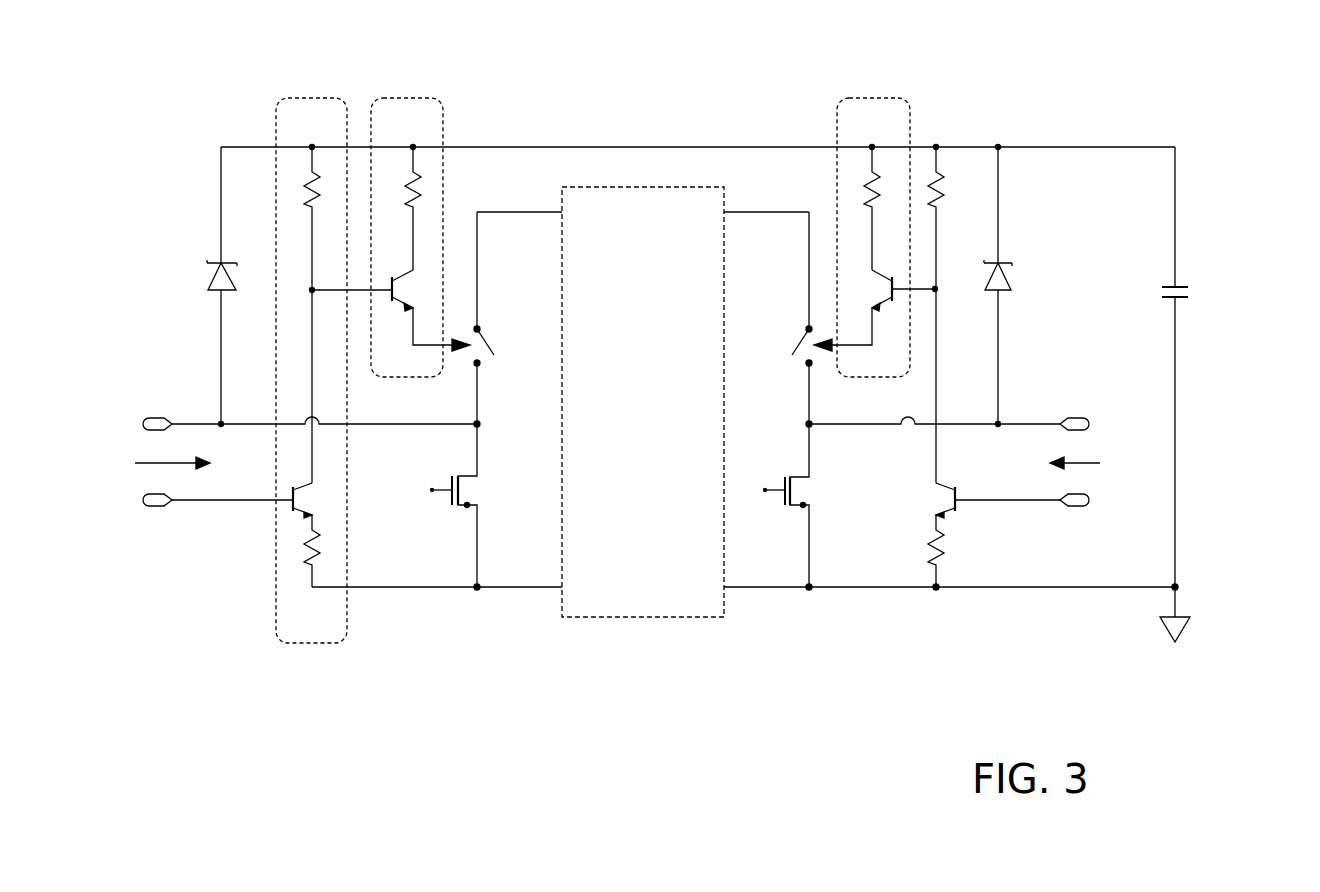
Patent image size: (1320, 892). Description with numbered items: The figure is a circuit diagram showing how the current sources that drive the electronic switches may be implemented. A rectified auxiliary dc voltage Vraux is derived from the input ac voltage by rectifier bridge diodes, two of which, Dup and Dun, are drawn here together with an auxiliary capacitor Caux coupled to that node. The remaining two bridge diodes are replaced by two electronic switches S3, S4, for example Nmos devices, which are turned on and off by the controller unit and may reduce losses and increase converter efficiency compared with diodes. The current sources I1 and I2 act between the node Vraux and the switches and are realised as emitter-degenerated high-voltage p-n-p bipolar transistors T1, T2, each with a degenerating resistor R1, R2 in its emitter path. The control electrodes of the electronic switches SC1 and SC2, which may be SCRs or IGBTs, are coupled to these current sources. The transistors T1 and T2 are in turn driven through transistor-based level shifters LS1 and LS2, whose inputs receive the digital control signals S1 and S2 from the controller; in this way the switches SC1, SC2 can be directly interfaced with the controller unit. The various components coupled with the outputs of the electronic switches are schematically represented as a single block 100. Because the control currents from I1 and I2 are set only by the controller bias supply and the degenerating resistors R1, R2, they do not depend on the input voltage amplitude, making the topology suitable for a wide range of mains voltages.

The rectified auxiliary dc voltage Vraux is at (247, 145).
The rectifier bridge diode Dup is at (215, 262).
The rectifier bridge diode Dun is at (1012, 275).
The auxiliary capacitor Caux is at (1182, 285).
The level shifter LS1 is at (290, 600).
The level shifter LS2 is at (945, 548).
The current source I1 is at (421, 122).
The current source I2 is at (872, 106).
The degenerating resistor R1 is at (424, 180).
The degenerating resistor R2 is at (862, 178).
The p-n-p bipolar transistor T1 is at (402, 270).
The p-n-p bipolar transistor T2 is at (880, 306).
The electronic switch SC1 is at (490, 333).
The electronic switch SC2 is at (800, 336).
The electronic switch S3 is at (432, 492).
The electronic switch S4 is at (805, 495).
The control signal S1 is at (157, 464).
The control signal S2 is at (1100, 464).
The block 100 is at (637, 600).